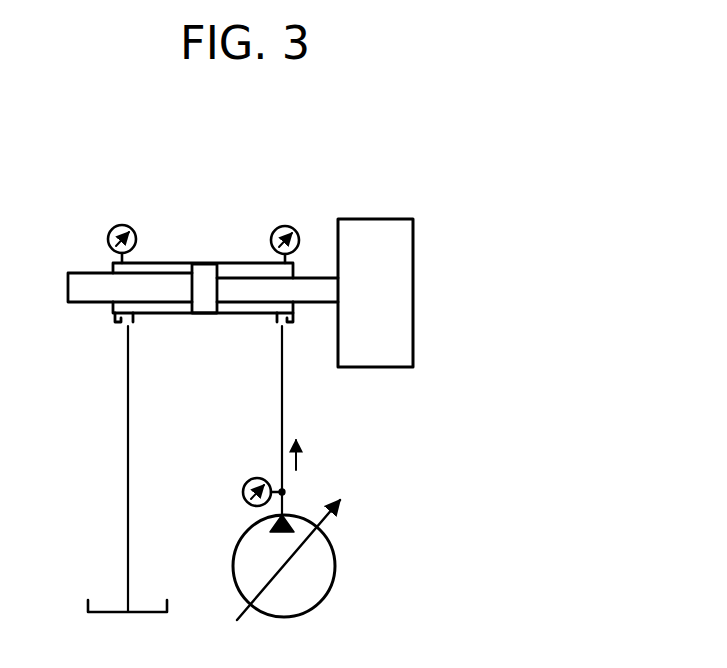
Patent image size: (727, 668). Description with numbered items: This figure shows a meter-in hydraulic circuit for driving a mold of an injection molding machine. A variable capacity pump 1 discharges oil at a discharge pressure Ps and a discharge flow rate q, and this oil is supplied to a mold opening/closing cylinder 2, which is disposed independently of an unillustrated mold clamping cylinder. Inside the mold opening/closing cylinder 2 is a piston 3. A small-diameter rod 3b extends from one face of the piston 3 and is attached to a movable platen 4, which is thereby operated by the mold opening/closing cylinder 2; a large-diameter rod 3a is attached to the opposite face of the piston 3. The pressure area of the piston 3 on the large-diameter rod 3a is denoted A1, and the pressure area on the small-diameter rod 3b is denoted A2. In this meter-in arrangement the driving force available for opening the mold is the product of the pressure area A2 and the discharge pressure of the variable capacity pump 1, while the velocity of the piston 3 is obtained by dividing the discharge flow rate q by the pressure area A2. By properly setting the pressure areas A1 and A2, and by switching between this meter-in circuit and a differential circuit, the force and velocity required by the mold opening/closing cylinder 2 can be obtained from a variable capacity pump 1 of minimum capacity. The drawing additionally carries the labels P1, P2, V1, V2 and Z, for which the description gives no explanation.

The variable capacity pump 1 is at (332, 590).
The mold opening/closing cylinder 2 is at (192, 226).
The piston 3 is at (205, 272).
The large-diameter rod 3a is at (84, 277).
The small-diameter rod 3b is at (310, 287).
The movable platen 4 is at (388, 223).
The pressure gauge chamber 1 P1 is at (123, 230).
The pressure gauge chamber 2 P2 is at (285, 230).
The discharge pressure Ps is at (264, 477).
The pressure area on large-diameter rod side A1 is at (193, 264).
The pressure area on small-diameter rod side A2 is at (219, 267).
The chamber volume 1 / return line to tank V1 is at (132, 467).
The chamber volume 2 / supply line V2 is at (262, 419).
The discharge flow rate q is at (308, 453).
The pump displacement setting Z is at (299, 552).